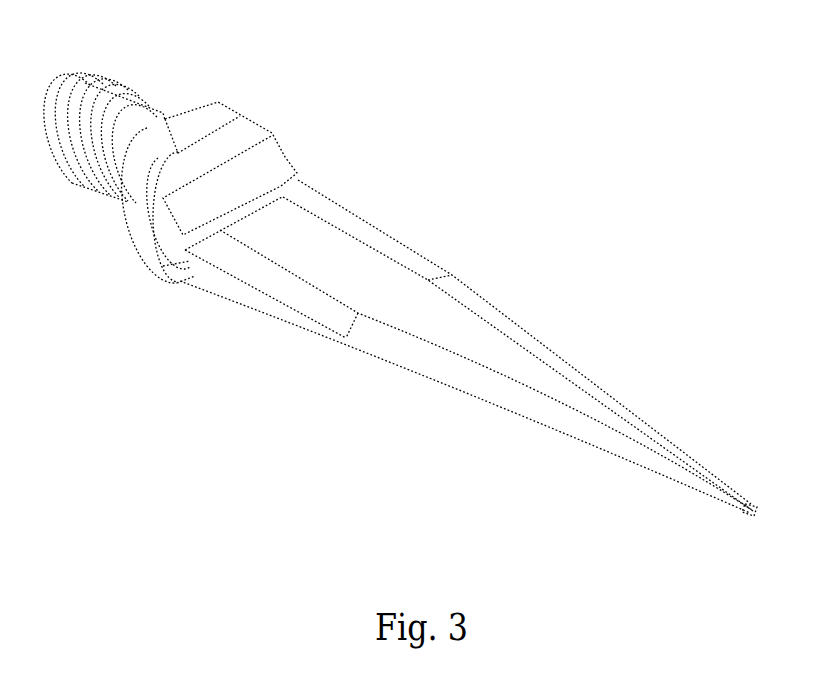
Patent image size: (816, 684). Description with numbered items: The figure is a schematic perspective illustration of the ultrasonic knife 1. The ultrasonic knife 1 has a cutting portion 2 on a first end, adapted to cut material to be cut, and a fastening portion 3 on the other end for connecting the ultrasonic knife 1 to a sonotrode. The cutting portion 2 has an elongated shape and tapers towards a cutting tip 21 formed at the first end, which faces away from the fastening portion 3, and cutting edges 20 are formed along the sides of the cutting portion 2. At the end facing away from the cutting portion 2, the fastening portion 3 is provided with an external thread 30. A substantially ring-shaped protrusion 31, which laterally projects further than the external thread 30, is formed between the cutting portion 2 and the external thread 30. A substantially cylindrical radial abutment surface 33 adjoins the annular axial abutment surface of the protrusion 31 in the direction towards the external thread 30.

The ultrasonic knife 1 is at (486, 182).
The cutting portion 2 is at (490, 352).
The cutting edges 20 is at (656, 433).
The cutting tip 21 is at (757, 512).
The fastening portion 3 is at (163, 111).
The external thread 30 is at (130, 96).
The ring-shaped protrusion 31 is at (240, 110).
The radial abutment surface 33 is at (124, 170).